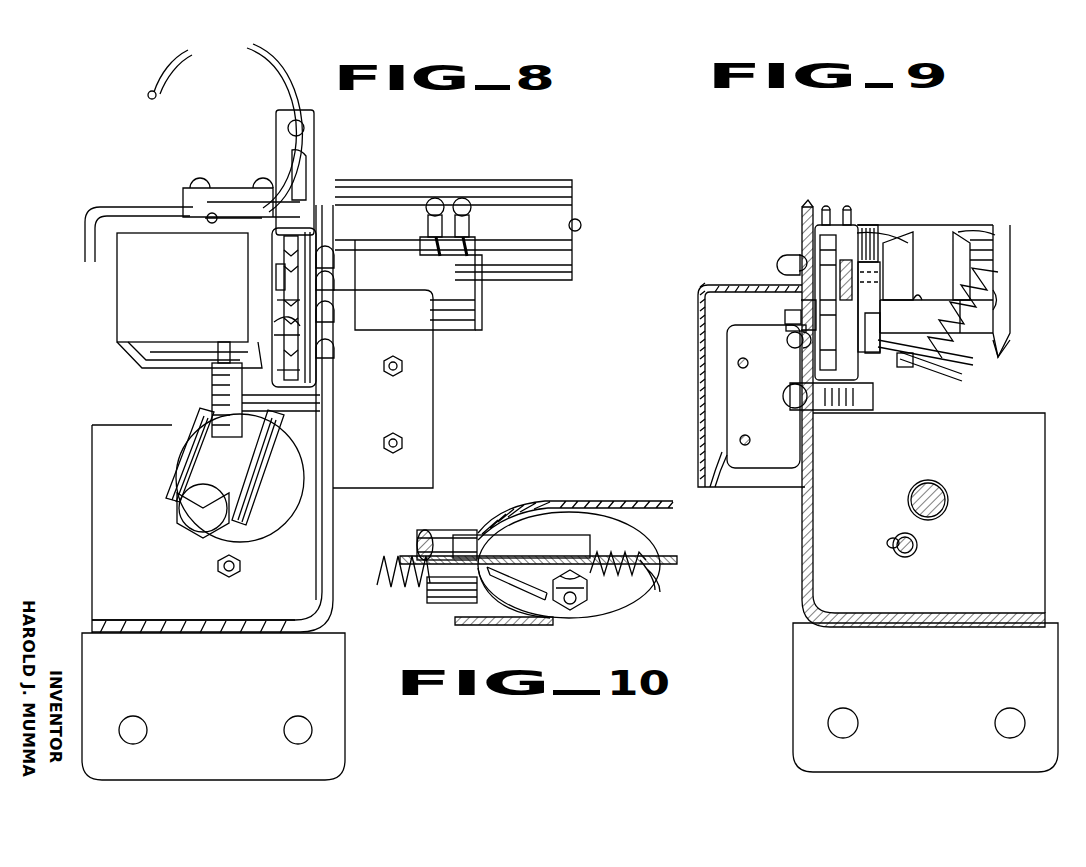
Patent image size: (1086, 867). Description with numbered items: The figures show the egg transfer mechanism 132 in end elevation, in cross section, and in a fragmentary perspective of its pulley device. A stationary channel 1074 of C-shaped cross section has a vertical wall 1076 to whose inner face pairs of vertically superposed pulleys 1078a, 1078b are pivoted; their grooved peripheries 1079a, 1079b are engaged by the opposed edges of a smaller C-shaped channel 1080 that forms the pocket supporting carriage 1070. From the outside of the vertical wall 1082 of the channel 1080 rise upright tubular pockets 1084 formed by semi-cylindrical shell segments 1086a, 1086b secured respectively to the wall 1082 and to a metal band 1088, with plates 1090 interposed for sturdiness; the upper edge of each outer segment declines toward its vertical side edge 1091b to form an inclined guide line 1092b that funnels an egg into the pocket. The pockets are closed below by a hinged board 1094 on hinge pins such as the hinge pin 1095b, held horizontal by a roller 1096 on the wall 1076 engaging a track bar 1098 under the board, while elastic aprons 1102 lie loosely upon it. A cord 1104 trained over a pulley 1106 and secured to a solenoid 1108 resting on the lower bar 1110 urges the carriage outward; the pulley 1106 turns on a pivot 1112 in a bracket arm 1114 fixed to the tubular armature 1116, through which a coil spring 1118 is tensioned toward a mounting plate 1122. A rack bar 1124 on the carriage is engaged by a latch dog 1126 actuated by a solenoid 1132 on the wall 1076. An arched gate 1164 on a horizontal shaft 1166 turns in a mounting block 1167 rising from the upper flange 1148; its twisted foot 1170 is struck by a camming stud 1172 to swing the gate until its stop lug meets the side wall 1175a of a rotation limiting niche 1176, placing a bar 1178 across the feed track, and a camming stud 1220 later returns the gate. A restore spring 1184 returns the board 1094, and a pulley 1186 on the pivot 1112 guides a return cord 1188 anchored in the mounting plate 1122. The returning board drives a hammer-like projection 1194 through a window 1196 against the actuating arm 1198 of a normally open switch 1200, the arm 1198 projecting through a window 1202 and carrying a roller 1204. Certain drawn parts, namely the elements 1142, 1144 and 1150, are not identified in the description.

In FIG. 8, the switch assembly 132 is at (110, 296).
In FIG. 9, the switch assembly 132 is at (790, 228).
In FIG. 8, the pocket supporting carriage 1070 is at (118, 316).
In FIG. 9, the pocket supporting carriage 1070 is at (1000, 224).
In FIG. 8, the channel 1074 is at (336, 509).
In FIG. 9, the channel 1074 is at (804, 537).
In FIG. 8, the vertical wall 1076 is at (325, 526).
In FIG. 9, the vertical wall 1076 is at (808, 556).
In FIG. 8, the pulley 1078a is at (334, 283).
In FIG. 9, the pulley 1078a is at (792, 272).
In FIG. 8, the pulley 1078b is at (334, 346).
In FIG. 9, the pulley 1078b is at (806, 338).
In FIG. 8, the grooved periphery 1079a is at (334, 267).
In FIG. 9, the grooved periphery 1079a is at (790, 257).
In FIG. 8, the grooved periphery 1079b is at (334, 322).
In FIG. 9, the grooved periphery 1079b is at (806, 352).
In FIG. 8, the channel 1080 is at (272, 257).
In FIG. 9, the channel 1080 is at (838, 225).
In FIG. 8, the vertical wall 1082 is at (277, 319).
In FIG. 9, the vertical wall 1082 is at (866, 240).
In FIG. 9, the tubular pocket 1084 is at (908, 226).
In FIG. 9, the semi-cylindrical shell segment 1086a is at (900, 246).
In FIG. 9, the semi-cylindrical shell segment 1086b is at (975, 252).
In FIG. 8, the metal band 1088 is at (138, 300).
In FIG. 9, the metal band 1088 is at (1008, 335).
In FIG. 9, the plate 1090 is at (988, 306).
In FIG. 9, the vertical side edge 1091b is at (937, 305).
In FIG. 9, the inclined guide line 1092b is at (1010, 237).
In FIG. 8, the board 1094 is at (212, 354).
In FIG. 9, the board 1094 is at (938, 365).
In FIG. 9, the hinge pin 1095b is at (872, 355).
In FIG. 8, the roller 1096 is at (216, 406).
In FIG. 8, the track bar 1098 is at (212, 372).
In FIG. 9, the track bar 1098 is at (925, 372).
In FIG. 8, the apron 1102 is at (124, 352).
In FIG. 9, the apron 1102 is at (945, 362).
In FIG. 8, the cord 1104 is at (190, 472).
In FIG. 10, the cord 1104 is at (506, 625).
In FIG. 8, the pulley 1106 is at (176, 441).
In FIG. 10, the pulley 1106 is at (628, 606).
In FIG. 8, the solenoid 1108 is at (293, 506).
In FIG. 8, the lower bar 1110 is at (177, 628).
In FIG. 9, the lower bar 1110 is at (1016, 612).
In FIG. 10, the pivot 1112 is at (569, 612).
In FIG. 8, the bracket arm 1114 is at (195, 458).
In FIG. 10, the bracket arm 1114 is at (553, 530).
In FIG. 10, the tubular armature 1116 is at (434, 608).
In FIG. 10, the coil spring 1118 is at (386, 582).
In FIG. 9, the coil spring 1118 is at (947, 495).
In FIG. 8, the mounting plate 1122 is at (167, 593).
In FIG. 9, the mounting plate 1122 is at (1010, 541).
In FIG. 8, the rack bar 1124 is at (277, 275).
In FIG. 9, the rack bar 1124 is at (880, 306).
In FIG. 8, the latch dog 1126 is at (279, 291).
In FIG. 8, the solenoid 1132 is at (474, 330).
In FIG. 8, the motor body 1142 is at (552, 178).
In FIG. 8, the pin 1144 is at (204, 214).
In FIG. 8, the upper flange 1148 is at (126, 207).
In FIG. 8, the pin 1150 is at (213, 224).
In FIG. 8, the arched gate 1164 is at (288, 88).
In FIG. 8, the horizontal shaft 1166 is at (304, 129).
In FIG. 8, the mounting block 1167 is at (306, 146).
In FIG. 8, the foot 1170 is at (336, 208).
In FIG. 8, the camming stud 1172 is at (250, 202).
In FIG. 9, the camming stud 1172 is at (848, 208).
In FIG. 8, the side wall 1175a is at (308, 166).
In FIG. 8, the rotation limiting niche 1176 is at (310, 178).
In FIG. 8, the bar 1178 is at (148, 92).
In FIG. 9, the restore spring 1184 is at (985, 313).
In FIG. 8, the pulley 1186 is at (248, 496).
In FIG. 10, the pulley 1186 is at (652, 545).
In FIG. 10, the cord 1188 is at (658, 500).
In FIG. 9, the cord 1188 is at (898, 556).
In FIG. 8, the hammer-like projection 1194 is at (282, 334).
In FIG. 9, the hammer-like projection 1194 is at (880, 320).
In FIG. 9, the window 1196 is at (880, 334).
In FIG. 8, the actuating arm 1198 is at (281, 306).
In FIG. 9, the actuating arm 1198 is at (802, 300).
In FIG. 8, the normally open switch 1200 is at (430, 408).
In FIG. 9, the normally open switch 1200 is at (786, 427).
In FIG. 9, the window 1202 is at (802, 307).
In FIG. 9, the roller 1204 is at (788, 319).
In FIG. 8, the camming stud 1220 is at (330, 227).
In FIG. 9, the camming stud 1220 is at (826, 208).